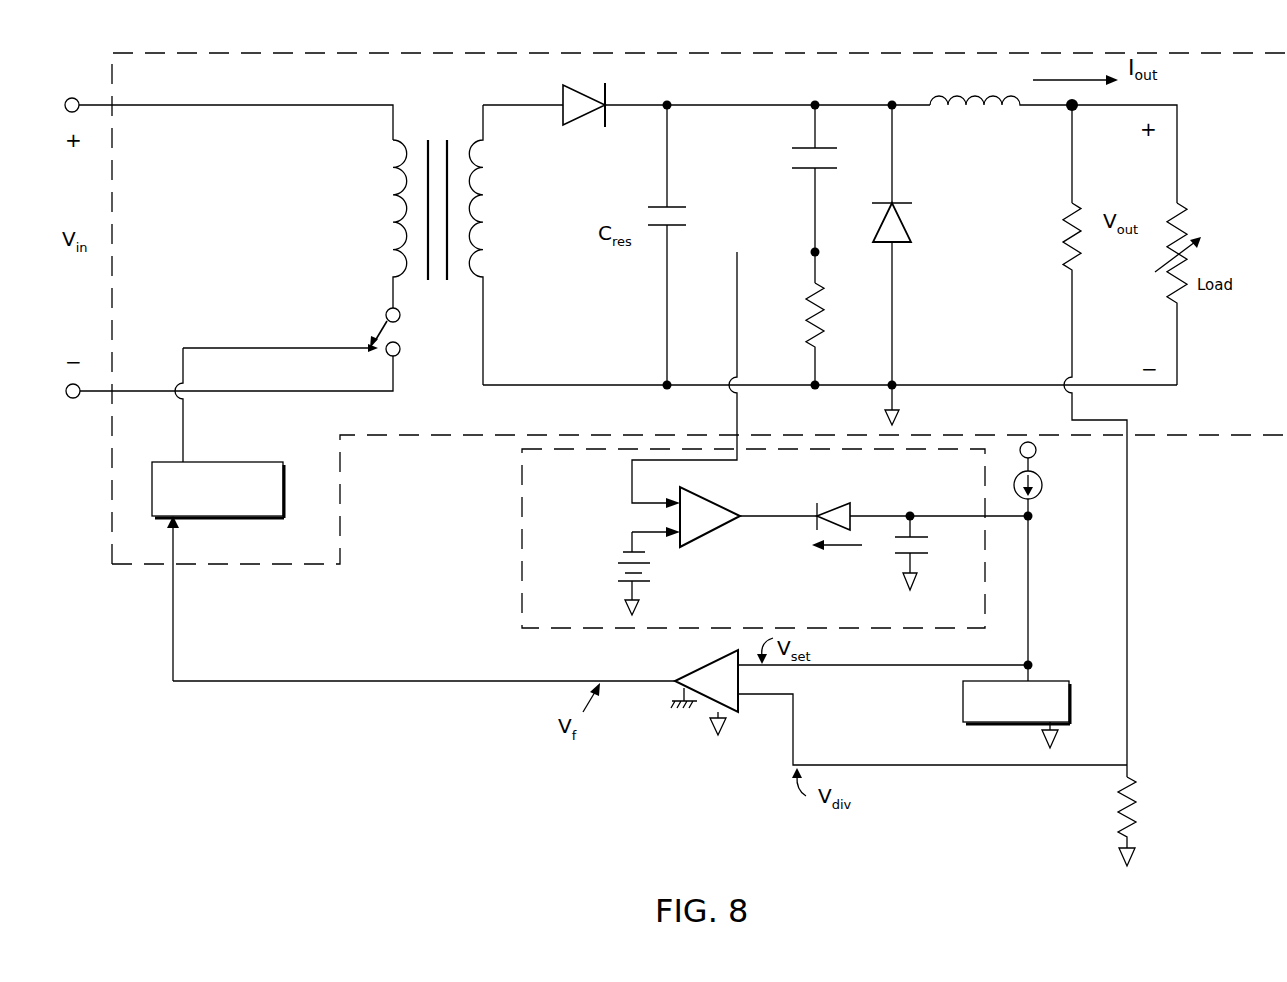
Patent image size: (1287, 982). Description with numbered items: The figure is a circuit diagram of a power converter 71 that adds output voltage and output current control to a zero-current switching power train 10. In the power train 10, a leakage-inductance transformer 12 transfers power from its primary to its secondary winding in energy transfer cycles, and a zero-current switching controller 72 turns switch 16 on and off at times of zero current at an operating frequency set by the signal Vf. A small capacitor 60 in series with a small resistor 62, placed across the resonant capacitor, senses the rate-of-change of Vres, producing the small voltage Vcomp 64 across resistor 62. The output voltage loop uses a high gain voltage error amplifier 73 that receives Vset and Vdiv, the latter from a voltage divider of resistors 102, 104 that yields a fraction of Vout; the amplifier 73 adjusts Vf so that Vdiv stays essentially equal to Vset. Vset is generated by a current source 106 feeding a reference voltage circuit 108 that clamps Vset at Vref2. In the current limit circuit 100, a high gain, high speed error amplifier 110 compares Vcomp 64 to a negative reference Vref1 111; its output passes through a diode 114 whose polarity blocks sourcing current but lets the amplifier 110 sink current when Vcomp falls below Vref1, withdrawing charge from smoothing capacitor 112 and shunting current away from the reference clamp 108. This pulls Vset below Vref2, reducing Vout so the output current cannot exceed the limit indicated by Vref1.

The zero-current switching power train 10 is at (508, 53).
The leakage-inductance transformer 12 is at (431, 116).
The switch 16 is at (373, 323).
The capacitor 60 is at (817, 148).
The resistor 62 is at (820, 295).
The Vcomp voltage 64 is at (632, 467).
The power converter 71 is at (258, 792).
The zero-current switching controller 72 is at (283, 468).
The voltage error amplifier 73 is at (712, 656).
The current limit circuit 100 is at (520, 517).
The resistor 102 is at (1068, 218).
The resistor 104 is at (1131, 787).
The current source 106 is at (1042, 481).
The reference voltage circuit 108 is at (1092, 674).
The error amplifier 110 is at (714, 499).
The negative reference Vref1 111 is at (650, 583).
The smoothing capacitor 112 is at (915, 542).
The diode 114 is at (848, 503).